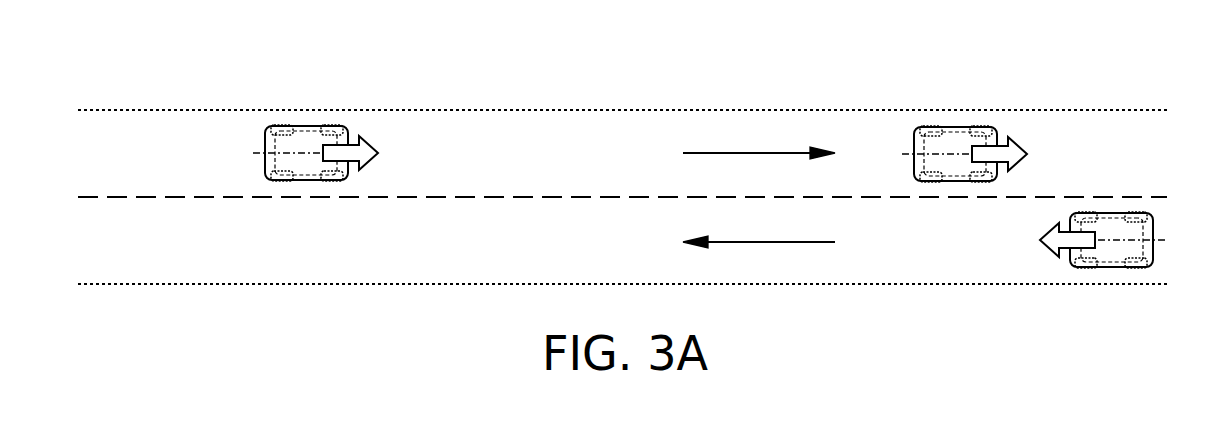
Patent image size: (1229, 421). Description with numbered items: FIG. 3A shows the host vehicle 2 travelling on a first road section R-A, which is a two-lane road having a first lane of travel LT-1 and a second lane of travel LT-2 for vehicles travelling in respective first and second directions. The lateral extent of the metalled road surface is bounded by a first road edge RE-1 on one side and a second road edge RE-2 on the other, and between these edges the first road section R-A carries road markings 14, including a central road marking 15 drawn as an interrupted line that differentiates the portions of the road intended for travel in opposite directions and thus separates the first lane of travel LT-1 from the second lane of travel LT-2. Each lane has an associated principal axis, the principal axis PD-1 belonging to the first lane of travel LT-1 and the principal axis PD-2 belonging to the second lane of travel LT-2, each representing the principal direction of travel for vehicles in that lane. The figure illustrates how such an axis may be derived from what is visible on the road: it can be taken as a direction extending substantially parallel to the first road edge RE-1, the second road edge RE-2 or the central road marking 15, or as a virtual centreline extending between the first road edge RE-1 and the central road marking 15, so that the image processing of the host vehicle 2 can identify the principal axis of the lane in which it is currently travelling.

The host vehicle 2 is at (263, 162).
The road markings 14 is at (1143, 157).
The central road marking 15 is at (1018, 199).
The first road section R-A is at (1016, 88).
The first road edge RE-1 is at (1175, 88).
The second road edge RE-2 is at (1157, 285).
The first lane of travel LT-1 is at (607, 165).
The second lane of travel LT-2 is at (607, 253).
The principal axis PD-1 is at (759, 143).
The principal axis PD-2 is at (759, 231).